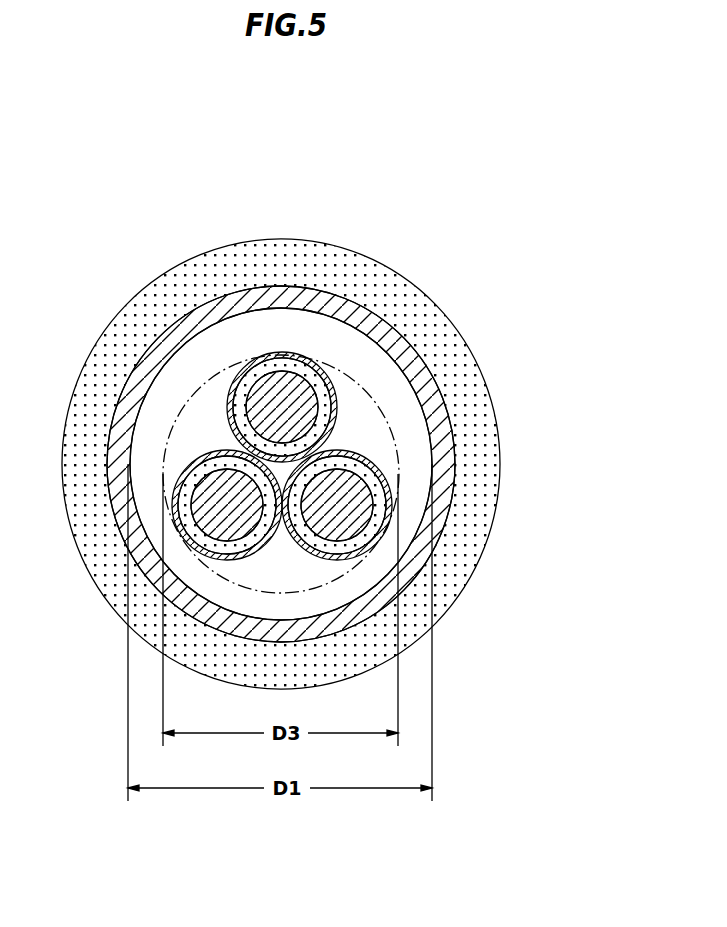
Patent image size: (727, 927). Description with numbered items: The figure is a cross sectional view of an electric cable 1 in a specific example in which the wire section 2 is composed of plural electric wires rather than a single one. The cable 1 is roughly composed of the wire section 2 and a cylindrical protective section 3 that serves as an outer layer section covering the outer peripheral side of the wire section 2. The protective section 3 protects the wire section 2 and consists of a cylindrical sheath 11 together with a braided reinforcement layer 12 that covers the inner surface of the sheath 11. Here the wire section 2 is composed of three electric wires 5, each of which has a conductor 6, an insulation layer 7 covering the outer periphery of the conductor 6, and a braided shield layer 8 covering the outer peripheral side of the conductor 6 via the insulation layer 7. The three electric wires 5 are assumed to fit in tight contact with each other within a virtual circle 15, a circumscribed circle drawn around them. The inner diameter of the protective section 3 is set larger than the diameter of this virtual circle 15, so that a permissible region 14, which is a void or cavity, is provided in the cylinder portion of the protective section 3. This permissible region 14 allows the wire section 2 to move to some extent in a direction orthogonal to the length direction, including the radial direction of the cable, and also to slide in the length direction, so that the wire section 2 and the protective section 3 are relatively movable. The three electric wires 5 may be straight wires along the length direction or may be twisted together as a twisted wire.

The electric cable 1 is at (261, 442).
The wire section 2 is at (318, 460).
The protective section 3 is at (261, 443).
The electric wire 5 is at (318, 526).
The conductor 6 is at (332, 478).
The insulation layer 7 is at (365, 461).
The braided shield layer 8 is at (400, 483).
The sheath 11 is at (112, 340).
The braided reinforcement layer 12 is at (177, 335).
The permissible region 14 is at (295, 333).
The virtual circle 15 is at (228, 363).